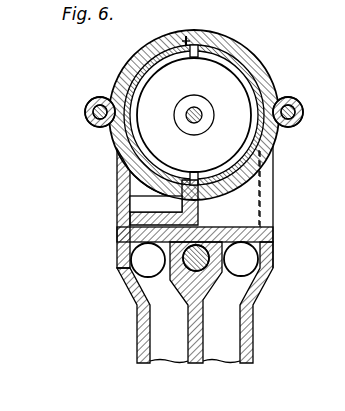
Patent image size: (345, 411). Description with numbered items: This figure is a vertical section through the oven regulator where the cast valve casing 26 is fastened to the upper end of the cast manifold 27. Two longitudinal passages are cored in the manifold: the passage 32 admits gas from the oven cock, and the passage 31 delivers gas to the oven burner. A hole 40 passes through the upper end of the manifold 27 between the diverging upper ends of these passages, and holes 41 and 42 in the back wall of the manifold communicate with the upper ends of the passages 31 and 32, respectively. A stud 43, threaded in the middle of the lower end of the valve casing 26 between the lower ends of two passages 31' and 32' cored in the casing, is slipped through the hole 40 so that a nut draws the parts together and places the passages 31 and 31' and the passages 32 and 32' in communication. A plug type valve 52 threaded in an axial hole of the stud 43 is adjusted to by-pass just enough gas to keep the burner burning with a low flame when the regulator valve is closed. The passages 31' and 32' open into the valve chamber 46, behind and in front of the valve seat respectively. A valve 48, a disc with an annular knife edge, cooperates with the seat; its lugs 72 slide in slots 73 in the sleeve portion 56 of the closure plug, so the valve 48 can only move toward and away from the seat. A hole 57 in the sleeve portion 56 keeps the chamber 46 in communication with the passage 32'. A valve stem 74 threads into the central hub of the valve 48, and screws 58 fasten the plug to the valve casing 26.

The valve casing 26 is at (240, 44).
The lugs 72 is at (200, 44).
The slots 73 is at (182, 40).
The valve stem 74 is at (196, 107).
The valve 48 is at (240, 98).
The sleeve portion 56 is at (128, 60).
The screws 58 is at (298, 108).
The valve chamber 46 is at (274, 148).
The hole 57 is at (148, 168).
The passage 32' is at (139, 202).
The passage 31' is at (292, 187).
The hole 40 is at (146, 256).
The hole 41 is at (250, 260).
The hole 42 is at (142, 268).
The stud 43 is at (201, 278).
The plug type valve 52 is at (182, 293).
The passage 32 is at (144, 315).
The manifold 27 is at (255, 339).
The passage 31 is at (221, 363).